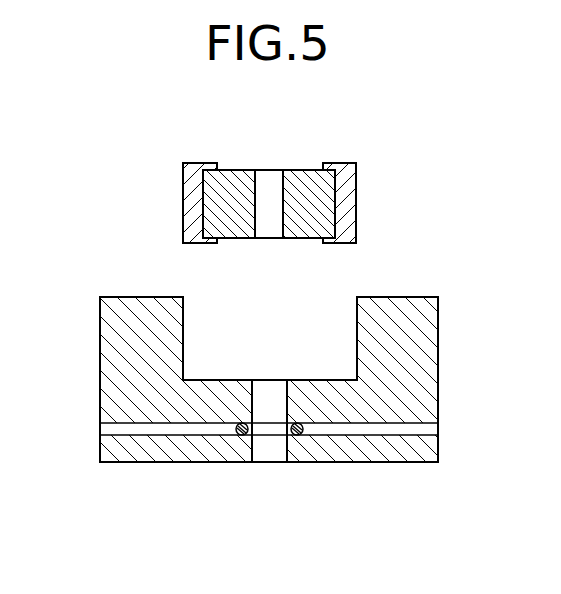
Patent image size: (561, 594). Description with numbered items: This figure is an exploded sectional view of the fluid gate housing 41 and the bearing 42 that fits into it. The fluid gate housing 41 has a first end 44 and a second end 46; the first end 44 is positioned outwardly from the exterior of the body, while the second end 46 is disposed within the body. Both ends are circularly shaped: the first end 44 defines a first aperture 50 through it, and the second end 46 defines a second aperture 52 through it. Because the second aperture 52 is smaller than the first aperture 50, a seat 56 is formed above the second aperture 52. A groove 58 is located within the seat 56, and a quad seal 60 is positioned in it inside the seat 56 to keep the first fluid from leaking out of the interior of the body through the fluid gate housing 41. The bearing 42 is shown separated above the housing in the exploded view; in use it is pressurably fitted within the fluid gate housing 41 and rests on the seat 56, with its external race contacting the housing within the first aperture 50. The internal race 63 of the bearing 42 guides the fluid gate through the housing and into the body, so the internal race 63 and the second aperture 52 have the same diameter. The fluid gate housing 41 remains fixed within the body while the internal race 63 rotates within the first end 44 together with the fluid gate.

The fluid gate housing 41 is at (278, 375).
The bearing 42 is at (312, 164).
The first end 44 is at (118, 316).
The second end 46 is at (427, 450).
The first aperture 50 is at (205, 316).
The second aperture 52 is at (268, 448).
The seat 56 is at (213, 380).
The groove 58 is at (187, 431).
The quad seal 60 is at (302, 430).
The internal race 63 is at (268, 182).